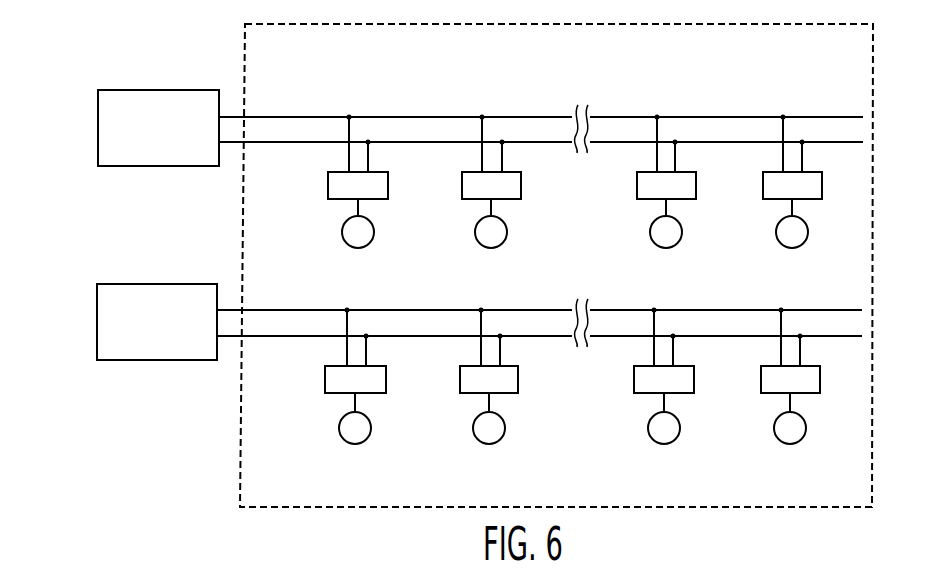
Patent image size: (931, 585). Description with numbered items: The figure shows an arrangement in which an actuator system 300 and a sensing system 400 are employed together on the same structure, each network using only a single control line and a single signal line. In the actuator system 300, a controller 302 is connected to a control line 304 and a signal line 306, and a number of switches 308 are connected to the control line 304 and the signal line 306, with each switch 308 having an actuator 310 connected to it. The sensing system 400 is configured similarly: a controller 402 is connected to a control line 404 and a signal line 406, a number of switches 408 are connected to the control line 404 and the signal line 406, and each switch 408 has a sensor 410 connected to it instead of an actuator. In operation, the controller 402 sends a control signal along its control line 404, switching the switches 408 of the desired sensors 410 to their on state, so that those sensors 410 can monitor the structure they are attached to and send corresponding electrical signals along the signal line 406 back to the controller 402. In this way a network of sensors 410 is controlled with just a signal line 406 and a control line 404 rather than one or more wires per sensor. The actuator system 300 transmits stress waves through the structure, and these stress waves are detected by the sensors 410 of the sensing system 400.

The actuator system 300 is at (84, 128).
The controller 302 is at (173, 139).
The control line 304 is at (286, 146).
The signal line 306 is at (283, 114).
The switch 308 is at (521, 190).
The actuator 310 is at (369, 243).
The sensing system 400 is at (82, 321).
The controller 402 is at (172, 332).
The control line 404 is at (285, 340).
The signal line 406 is at (283, 307).
The switch 408 is at (518, 385).
The sensor 410 is at (367, 440).